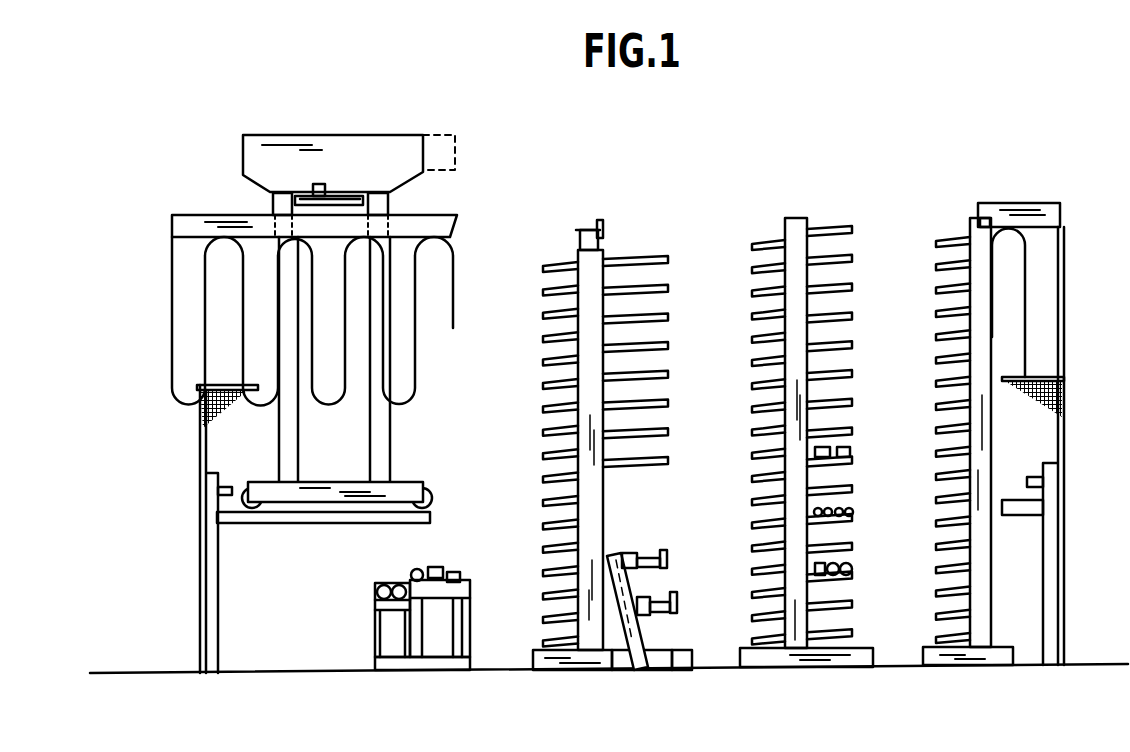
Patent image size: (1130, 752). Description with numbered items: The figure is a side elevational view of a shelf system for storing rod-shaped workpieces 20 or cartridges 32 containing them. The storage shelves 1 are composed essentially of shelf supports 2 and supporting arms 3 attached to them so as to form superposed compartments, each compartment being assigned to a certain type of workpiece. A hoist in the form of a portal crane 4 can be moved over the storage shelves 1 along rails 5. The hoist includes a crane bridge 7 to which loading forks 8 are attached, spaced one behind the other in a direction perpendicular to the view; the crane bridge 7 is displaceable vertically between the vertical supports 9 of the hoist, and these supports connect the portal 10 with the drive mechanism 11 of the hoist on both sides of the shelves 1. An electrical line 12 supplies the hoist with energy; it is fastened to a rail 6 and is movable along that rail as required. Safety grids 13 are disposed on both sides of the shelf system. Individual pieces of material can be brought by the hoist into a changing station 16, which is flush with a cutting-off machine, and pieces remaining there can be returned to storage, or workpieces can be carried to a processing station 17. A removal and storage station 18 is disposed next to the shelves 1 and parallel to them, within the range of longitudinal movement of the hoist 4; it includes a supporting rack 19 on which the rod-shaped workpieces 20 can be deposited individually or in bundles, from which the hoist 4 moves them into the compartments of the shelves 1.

The storage shelves 1 is at (815, 394).
The shelf supports 2 is at (786, 231).
The supporting arms 3 is at (851, 256).
The portal crane 4 is at (349, 132).
The rails 5 is at (233, 524).
The rail 6 is at (193, 224).
The crane bridge 7 is at (322, 182).
The loading forks 8 is at (305, 190).
The vertical supports 9 is at (286, 447).
The portal 10 is at (400, 152).
The drive mechanism 11 is at (290, 502).
The electrical line 12 is at (172, 282).
The safety grids 13 is at (200, 422).
The changing station 16 is at (632, 630).
The processing station 17 is at (387, 647).
The removal and storage station 18 is at (460, 680).
The supporting rack 19 is at (443, 636).
The rod-shaped workpieces 20 is at (436, 566).
The cartridges 32 is at (375, 590).